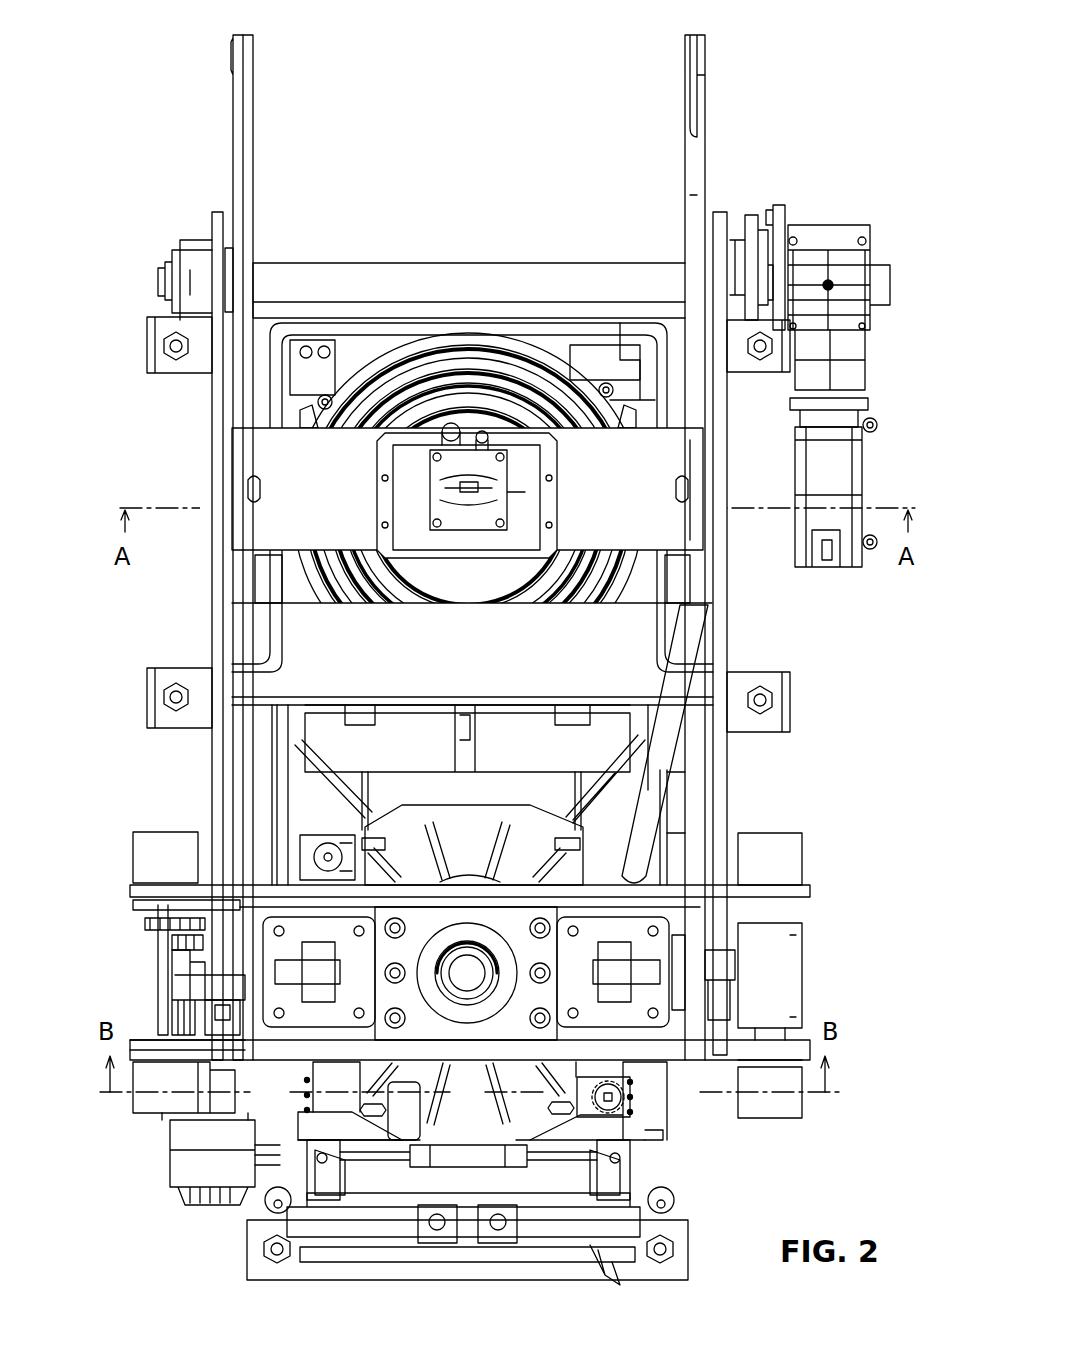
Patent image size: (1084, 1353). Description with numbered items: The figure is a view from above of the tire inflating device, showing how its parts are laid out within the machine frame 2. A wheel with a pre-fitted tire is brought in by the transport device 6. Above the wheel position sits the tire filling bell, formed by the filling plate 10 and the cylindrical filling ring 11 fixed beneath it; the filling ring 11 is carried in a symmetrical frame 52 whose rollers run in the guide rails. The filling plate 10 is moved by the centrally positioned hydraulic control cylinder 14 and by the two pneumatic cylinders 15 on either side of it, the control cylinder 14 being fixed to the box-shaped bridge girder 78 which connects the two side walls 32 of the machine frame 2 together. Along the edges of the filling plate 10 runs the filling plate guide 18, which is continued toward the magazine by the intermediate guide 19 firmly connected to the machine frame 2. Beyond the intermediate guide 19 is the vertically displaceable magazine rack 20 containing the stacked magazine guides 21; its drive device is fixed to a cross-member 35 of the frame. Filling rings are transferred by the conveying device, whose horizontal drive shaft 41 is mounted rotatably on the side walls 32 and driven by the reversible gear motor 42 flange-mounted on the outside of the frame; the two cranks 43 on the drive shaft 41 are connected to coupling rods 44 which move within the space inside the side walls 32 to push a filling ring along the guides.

The machine frame 2 is at (738, 615).
The transport device 6 is at (788, 978).
The filling plate 10 is at (453, 815).
The filling ring 11 is at (445, 333).
The hydraulic control cylinder 14 is at (505, 1035).
The pneumatic cylinders 15 is at (650, 945).
The filling plate guide 18 is at (260, 834).
The intermediate guide 19 is at (262, 740).
The magazine rack 20 is at (503, 320).
The magazine guides 21 is at (270, 574).
The side walls 32 is at (218, 218).
The cross-member 35 is at (685, 525).
The drive shaft 41 is at (382, 272).
The reversible gear motor 42 is at (838, 225).
The cranks 43 is at (233, 132).
The coupling rods 44 is at (253, 135).
The frame 52 is at (607, 322).
The bridge girder 78 is at (600, 884).